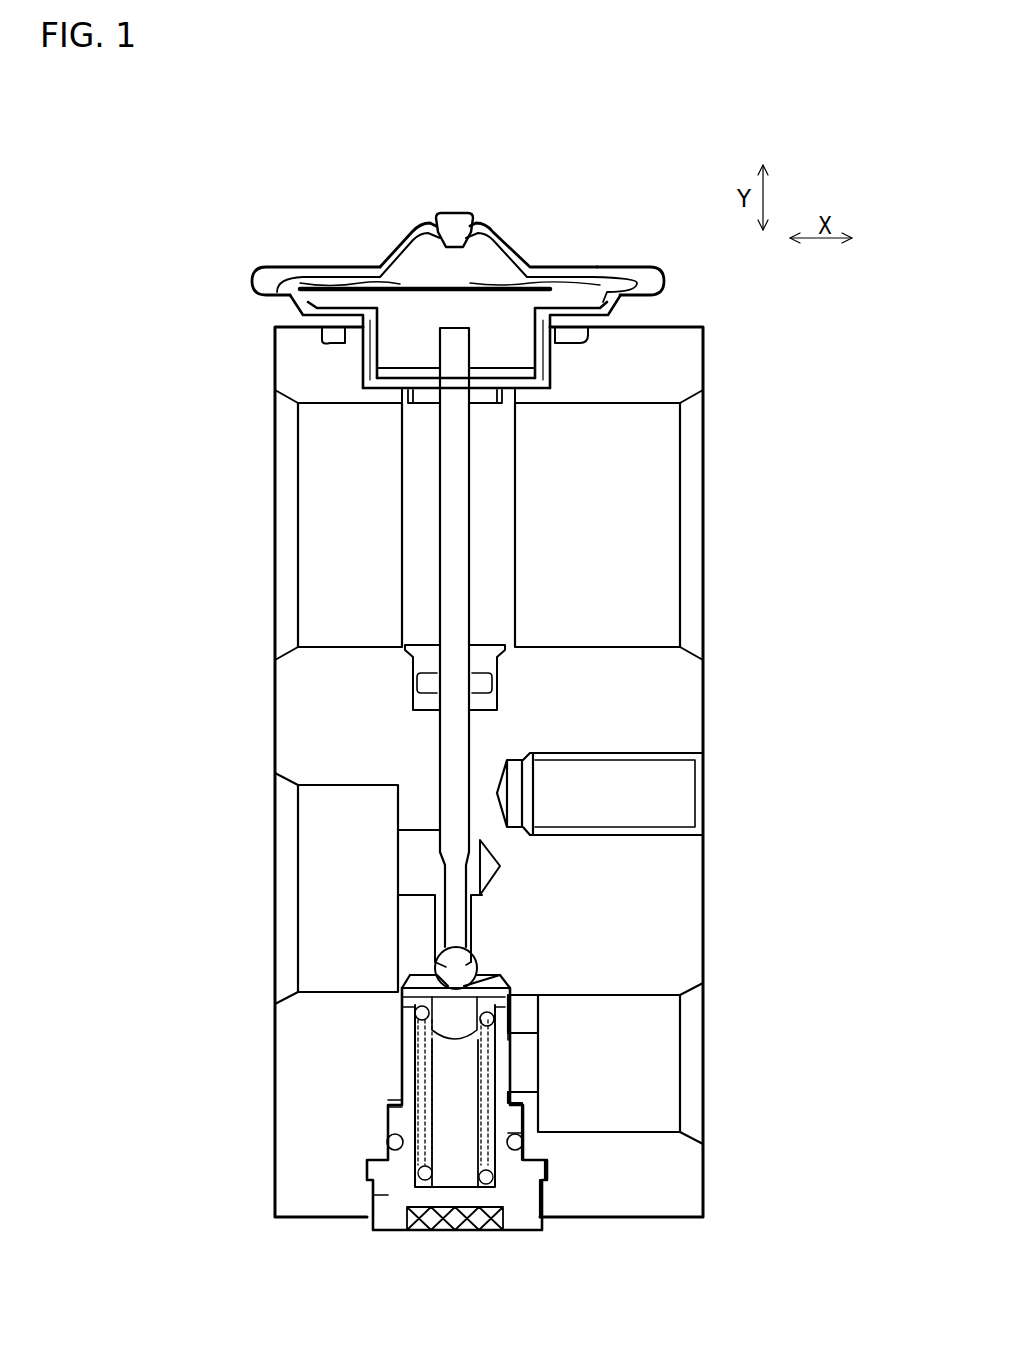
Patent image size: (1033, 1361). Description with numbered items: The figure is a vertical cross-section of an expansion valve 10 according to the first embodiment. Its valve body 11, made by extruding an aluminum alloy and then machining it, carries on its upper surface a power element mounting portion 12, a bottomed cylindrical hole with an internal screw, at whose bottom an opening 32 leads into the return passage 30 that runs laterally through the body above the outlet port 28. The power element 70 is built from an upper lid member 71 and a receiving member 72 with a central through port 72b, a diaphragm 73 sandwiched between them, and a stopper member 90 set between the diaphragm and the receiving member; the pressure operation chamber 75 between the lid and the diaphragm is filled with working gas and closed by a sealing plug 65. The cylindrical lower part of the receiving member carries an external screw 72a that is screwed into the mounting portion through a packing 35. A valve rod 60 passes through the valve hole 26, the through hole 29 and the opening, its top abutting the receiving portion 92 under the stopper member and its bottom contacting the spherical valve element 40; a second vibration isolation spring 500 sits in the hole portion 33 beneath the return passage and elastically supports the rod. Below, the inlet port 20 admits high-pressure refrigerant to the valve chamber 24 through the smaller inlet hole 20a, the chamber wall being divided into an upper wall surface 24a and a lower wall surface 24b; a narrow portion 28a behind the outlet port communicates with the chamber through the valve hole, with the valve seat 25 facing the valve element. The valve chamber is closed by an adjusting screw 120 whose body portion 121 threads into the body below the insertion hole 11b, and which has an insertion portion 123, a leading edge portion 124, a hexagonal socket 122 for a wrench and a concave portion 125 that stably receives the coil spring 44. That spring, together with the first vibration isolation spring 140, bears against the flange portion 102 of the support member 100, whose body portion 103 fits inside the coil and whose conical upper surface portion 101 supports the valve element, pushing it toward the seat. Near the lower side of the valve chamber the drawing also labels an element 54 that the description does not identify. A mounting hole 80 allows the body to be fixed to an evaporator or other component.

The expansion valve 10 is at (745, 665).
The valve body 11 is at (690, 712).
The insertion hole 11b is at (385, 1100).
The power element mounting portion 12 is at (553, 370).
The inlet port 20 is at (668, 1113).
The inlet hole 20a is at (523, 1065).
The valve chamber 24 is at (537, 1082).
The upper wall surface 24a is at (520, 1000).
The lower wall surface 24b is at (528, 1103).
The valve seat 25 is at (470, 952).
The valve hole 26 is at (476, 928).
The outlet port 28 is at (330, 893).
The narrow portion 28a is at (420, 830).
The through hole 29 is at (452, 742).
The return passage 30 is at (362, 551).
The opening 32 is at (427, 402).
The hole portion 33 is at (418, 665).
The packing 35 is at (330, 335).
The valve element 40 is at (447, 962).
The coil spring 44 is at (410, 1070).
The seal member 54 is at (523, 1133).
The valve rod 60 is at (458, 548).
The sealing plug 65 is at (453, 213).
The power element 70 is at (488, 268).
The upper lid member 71 is at (493, 222).
The receiving member 72 is at (615, 313).
The external screw 72a is at (360, 366).
The through port 72b is at (562, 332).
The diaphragm 73 is at (400, 288).
The pressure operation chamber 75 is at (425, 250).
The mounting hole 80 is at (690, 795).
The stopper member 90 is at (520, 372).
The receiving portion 92 is at (475, 345).
The support member 100 is at (485, 985).
The upper surface portion 101 is at (430, 990).
The flange portion 102 is at (420, 1004).
The body portion 103 is at (412, 1022).
The adjusting screw 120 is at (405, 1240).
The body portion 121 is at (382, 1225).
The hexagonal socket 122 is at (478, 1215).
The insertion portion 123 is at (370, 1168).
The leading edge portion 124 is at (388, 1140).
The concave portion 125 is at (428, 1185).
The first vibration isolation spring 140 is at (492, 1020).
The second vibration isolation spring 500 is at (422, 688).